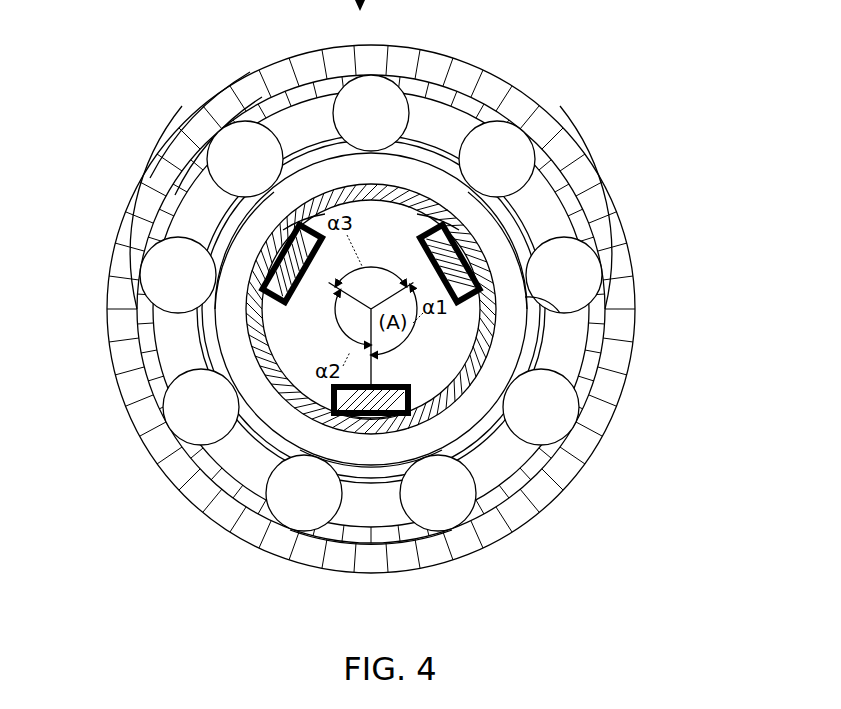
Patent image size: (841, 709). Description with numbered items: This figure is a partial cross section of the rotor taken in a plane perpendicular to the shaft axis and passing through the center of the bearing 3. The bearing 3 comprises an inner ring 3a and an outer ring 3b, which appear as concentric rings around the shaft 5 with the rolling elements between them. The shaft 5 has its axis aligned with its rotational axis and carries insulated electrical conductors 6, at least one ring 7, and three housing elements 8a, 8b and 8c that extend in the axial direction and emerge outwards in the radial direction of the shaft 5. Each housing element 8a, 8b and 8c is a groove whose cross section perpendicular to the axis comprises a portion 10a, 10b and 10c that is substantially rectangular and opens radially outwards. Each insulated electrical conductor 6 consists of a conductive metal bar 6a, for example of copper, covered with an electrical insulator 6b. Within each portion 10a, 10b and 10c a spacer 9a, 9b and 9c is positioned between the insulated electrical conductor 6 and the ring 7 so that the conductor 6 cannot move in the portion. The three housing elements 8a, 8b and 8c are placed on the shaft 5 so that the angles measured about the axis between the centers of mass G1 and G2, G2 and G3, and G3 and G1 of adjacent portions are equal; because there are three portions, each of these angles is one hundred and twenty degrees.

The bearing 3 is at (233, 70).
The inner ring 3a is at (205, 476).
The outer ring 3b is at (236, 515).
The shaft 5 is at (598, 357).
The insulated electrical conductor 6 is at (556, 238).
The conductive metal bar 6a is at (578, 318).
The electrical insulator 6b is at (563, 343).
The ring 7 is at (516, 480).
The housing element 8a is at (440, 218).
The housing element 8b is at (350, 422).
The housing element 8c is at (247, 283).
The spacer 9a is at (580, 228).
The spacer 9b is at (391, 535).
The spacer 9c is at (248, 226).
The portion 10a is at (525, 270).
The portion 10b is at (352, 468).
The portion 10c is at (252, 257).
The center of mass G1 is at (423, 252).
The center of mass G2 is at (397, 388).
The center of mass G3 is at (287, 298).